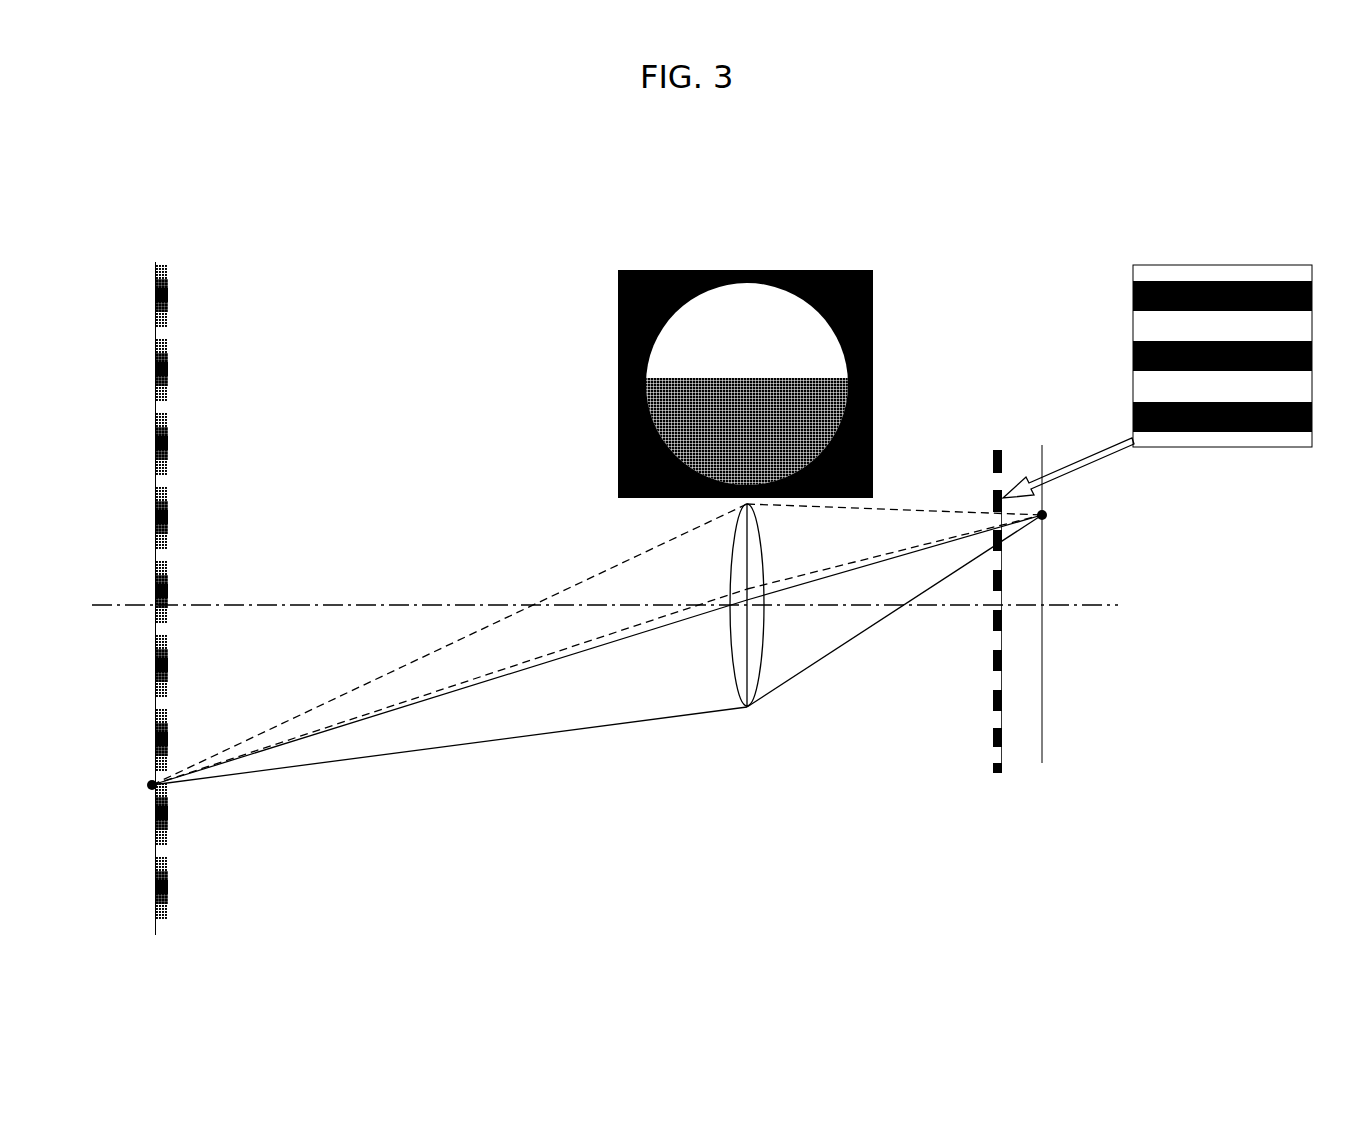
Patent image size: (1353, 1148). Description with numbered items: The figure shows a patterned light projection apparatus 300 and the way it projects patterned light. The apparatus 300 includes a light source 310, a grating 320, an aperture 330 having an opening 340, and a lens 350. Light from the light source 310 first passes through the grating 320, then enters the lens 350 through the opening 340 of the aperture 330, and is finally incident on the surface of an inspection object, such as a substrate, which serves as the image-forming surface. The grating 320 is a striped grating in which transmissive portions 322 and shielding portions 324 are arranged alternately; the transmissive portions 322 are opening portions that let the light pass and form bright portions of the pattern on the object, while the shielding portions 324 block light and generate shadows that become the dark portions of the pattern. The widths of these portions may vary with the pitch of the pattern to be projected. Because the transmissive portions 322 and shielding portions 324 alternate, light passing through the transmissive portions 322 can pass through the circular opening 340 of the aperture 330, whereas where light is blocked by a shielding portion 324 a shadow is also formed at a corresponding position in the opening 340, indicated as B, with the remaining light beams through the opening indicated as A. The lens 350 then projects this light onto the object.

The patterned light projection apparatus 300 is at (990, 154).
The light source 310 is at (1047, 515).
The grating 320 is at (955, 617).
The transmissive portions 322 is at (992, 482).
The shielding portions 324 is at (993, 458).
The aperture 330 is at (746, 268).
The opening 340 is at (680, 342).
The lens 350 is at (756, 722).
The upper ray bundle A is at (635, 583).
The shadow in the opening of the aperture B is at (653, 685).